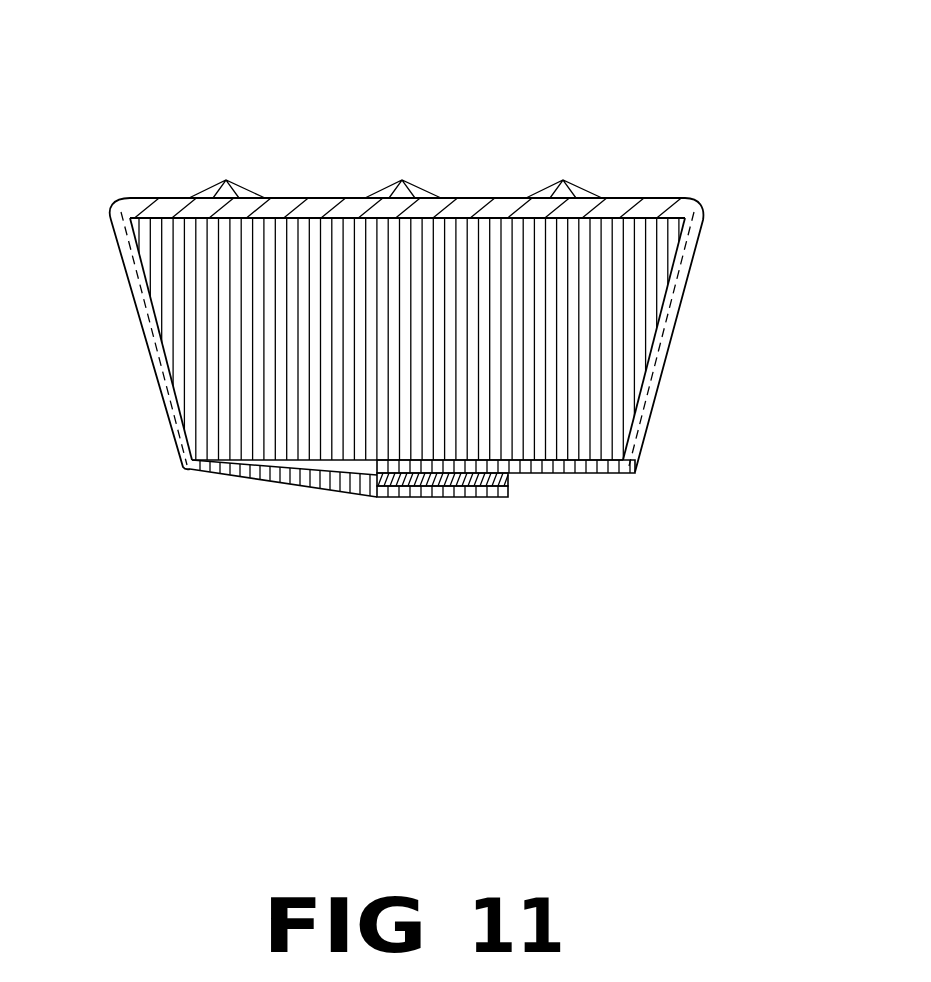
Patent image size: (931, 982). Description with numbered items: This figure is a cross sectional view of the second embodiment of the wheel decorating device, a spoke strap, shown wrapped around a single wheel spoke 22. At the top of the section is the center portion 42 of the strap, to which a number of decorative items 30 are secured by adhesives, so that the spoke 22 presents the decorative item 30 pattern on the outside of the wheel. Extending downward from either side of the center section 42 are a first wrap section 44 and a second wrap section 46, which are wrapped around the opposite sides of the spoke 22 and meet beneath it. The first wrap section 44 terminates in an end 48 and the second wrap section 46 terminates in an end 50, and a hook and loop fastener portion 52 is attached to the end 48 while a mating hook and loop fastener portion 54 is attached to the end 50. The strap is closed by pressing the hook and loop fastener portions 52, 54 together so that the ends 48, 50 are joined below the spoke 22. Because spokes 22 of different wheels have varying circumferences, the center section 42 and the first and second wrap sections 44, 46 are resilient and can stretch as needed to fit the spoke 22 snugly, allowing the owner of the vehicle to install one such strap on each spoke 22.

The spoke 22 is at (258, 333).
The decorative item 30 is at (402, 187).
The center portion 42 is at (327, 198).
The first wrap section 44 is at (658, 390).
The second wrap section 46 is at (172, 418).
The end 48 is at (377, 463).
The end 50 is at (468, 557).
The hook and loop fastener portion 52 is at (417, 473).
The hook and loop fastener portion 54 is at (444, 481).